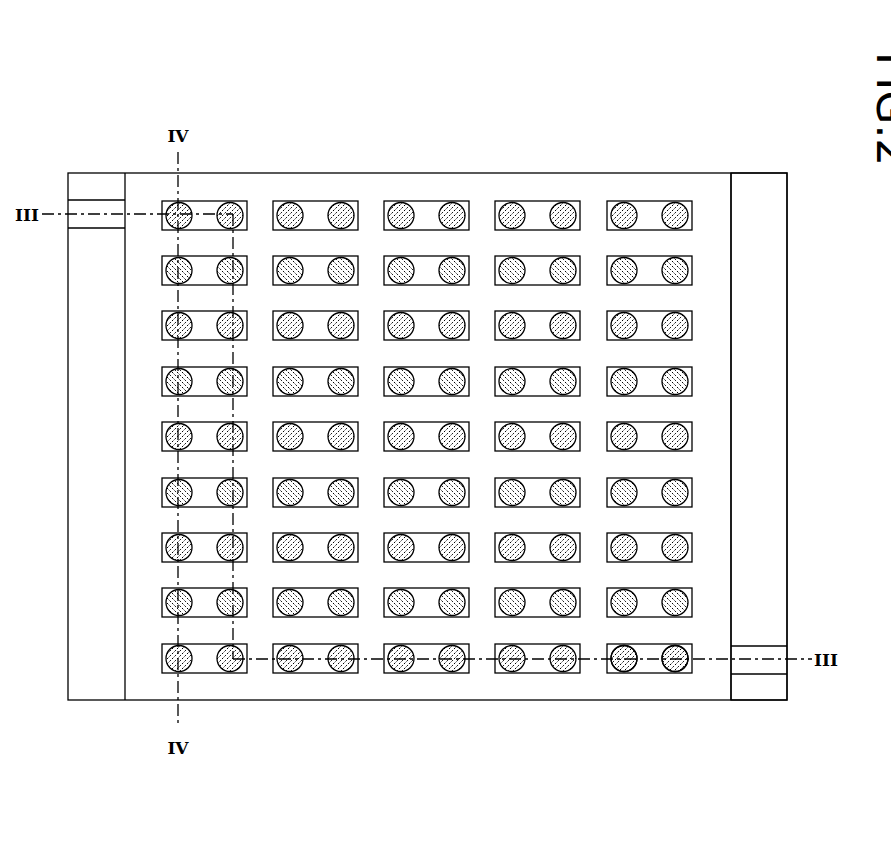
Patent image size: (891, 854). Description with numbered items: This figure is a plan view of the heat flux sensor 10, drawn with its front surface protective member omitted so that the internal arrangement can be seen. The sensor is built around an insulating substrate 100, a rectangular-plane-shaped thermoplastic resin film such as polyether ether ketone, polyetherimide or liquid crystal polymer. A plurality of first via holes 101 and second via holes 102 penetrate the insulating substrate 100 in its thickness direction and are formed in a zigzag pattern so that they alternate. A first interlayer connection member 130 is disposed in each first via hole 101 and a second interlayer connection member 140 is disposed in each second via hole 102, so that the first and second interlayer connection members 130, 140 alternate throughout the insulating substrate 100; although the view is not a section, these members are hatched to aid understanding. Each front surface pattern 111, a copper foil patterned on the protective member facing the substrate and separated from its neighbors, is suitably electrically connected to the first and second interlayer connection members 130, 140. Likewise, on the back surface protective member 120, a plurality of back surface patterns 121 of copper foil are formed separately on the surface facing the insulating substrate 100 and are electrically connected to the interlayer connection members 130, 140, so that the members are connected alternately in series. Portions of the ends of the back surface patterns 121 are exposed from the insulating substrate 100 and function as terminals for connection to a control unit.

The heat flux sensor 10 is at (110, 165).
The insulating substrate 100 is at (715, 487).
The back surface protective member 120 is at (760, 543).
The back surface pattern 121 is at (90, 207).
The front surface pattern 111 is at (648, 672).
The first interlayer connection member 130 is at (609, 672).
The first via hole 101 is at (616, 674).
The second interlayer connection member 140 is at (662, 674).
The second via hole 102 is at (676, 674).